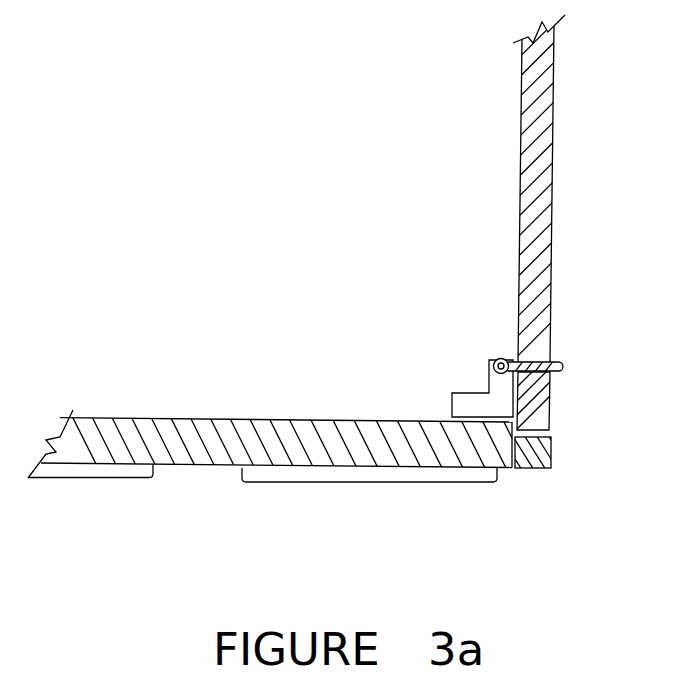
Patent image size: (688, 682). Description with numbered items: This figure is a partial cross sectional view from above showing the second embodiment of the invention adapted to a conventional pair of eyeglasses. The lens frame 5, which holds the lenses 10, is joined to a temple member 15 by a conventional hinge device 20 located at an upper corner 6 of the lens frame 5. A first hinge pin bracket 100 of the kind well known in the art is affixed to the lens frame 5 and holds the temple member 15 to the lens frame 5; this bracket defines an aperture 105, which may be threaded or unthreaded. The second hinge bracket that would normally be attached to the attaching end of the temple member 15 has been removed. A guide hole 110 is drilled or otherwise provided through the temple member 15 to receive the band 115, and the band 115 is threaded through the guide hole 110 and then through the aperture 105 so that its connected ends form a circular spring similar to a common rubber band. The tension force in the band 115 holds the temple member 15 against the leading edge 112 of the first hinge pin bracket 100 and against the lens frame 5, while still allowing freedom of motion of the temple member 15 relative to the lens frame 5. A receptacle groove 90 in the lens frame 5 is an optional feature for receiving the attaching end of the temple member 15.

The lens frame 5 is at (199, 418).
The upper corner 6 is at (478, 517).
The lenses 10 is at (88, 478).
The temple member 15 is at (555, 108).
The hinge device 20 is at (504, 346).
The receptacle groove 90 is at (513, 440).
The first hinge pin bracket 100 is at (460, 390).
The aperture 105 is at (492, 361).
The guide hole 110 is at (543, 348).
The leading edge 112 is at (516, 406).
The band 115 is at (562, 368).